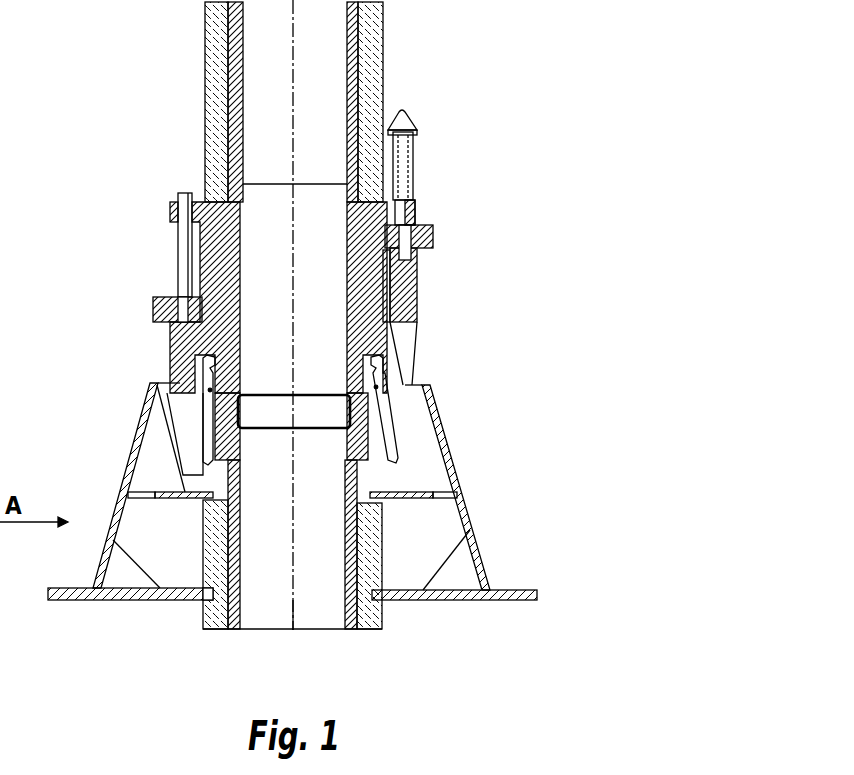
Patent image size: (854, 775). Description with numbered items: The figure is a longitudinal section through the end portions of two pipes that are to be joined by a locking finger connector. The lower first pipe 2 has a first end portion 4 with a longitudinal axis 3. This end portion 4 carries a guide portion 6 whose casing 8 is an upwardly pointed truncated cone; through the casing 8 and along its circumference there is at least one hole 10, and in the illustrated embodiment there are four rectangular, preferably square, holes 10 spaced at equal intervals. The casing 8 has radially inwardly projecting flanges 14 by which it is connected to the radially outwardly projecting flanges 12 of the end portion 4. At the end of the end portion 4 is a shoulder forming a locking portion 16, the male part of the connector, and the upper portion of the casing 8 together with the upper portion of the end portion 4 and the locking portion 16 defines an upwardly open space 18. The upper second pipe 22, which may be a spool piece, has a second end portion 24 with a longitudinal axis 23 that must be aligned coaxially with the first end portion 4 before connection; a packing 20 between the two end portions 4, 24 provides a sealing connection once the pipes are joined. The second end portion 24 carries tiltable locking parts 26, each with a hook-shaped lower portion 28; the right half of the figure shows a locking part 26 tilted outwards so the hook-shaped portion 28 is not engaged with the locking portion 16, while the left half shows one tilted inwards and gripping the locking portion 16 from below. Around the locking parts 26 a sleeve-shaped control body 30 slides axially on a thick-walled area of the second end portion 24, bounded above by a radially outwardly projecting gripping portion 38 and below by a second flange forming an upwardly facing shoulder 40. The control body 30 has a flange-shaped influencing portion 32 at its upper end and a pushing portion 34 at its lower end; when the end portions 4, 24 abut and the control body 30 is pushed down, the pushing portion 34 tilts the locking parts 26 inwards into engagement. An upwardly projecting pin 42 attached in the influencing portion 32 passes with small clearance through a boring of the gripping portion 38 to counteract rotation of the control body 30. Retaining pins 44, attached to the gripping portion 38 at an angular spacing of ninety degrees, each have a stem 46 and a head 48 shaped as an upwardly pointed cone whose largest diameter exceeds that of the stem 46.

The first pipe 2 is at (346, 628).
The longitudinal axis 3 is at (290, 612).
The first end portion 4 is at (345, 540).
The guide portion 6 is at (483, 562).
The casing 8 is at (480, 545).
The hole 10 is at (468, 497).
The radially outwardly projecting flanges 12 is at (208, 630).
The radially inwardly projecting flanges 14 is at (185, 600).
The locking portion 16 is at (240, 432).
The upwardly open space 18 is at (378, 478).
The packing 20 is at (270, 394).
The second pipe 22 is at (232, 52).
The longitudinal axis 23 is at (297, 68).
The second end portion 24 is at (218, 255).
The locking parts 26 is at (203, 433).
The hook-shaped lower portion 28 is at (195, 448).
The control body 30 is at (417, 285).
The influencing portion 32 is at (433, 235).
The pushing portion 34 is at (397, 400).
The gripping portion 38 is at (415, 210).
The shoulder 40 is at (415, 315).
The pin 42 is at (180, 277).
The retaining pins 44 is at (403, 178).
The stem 46 is at (412, 143).
The head 48 is at (412, 122).